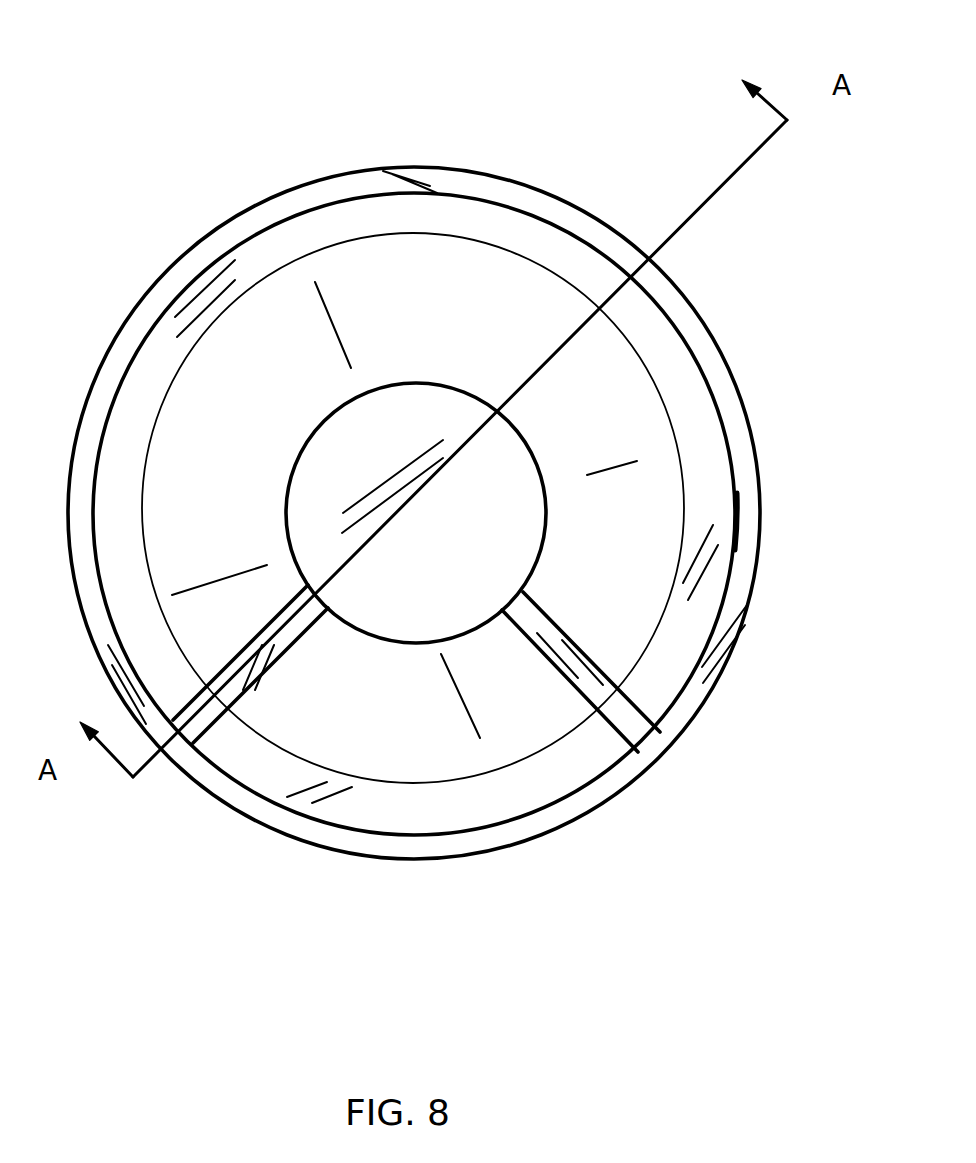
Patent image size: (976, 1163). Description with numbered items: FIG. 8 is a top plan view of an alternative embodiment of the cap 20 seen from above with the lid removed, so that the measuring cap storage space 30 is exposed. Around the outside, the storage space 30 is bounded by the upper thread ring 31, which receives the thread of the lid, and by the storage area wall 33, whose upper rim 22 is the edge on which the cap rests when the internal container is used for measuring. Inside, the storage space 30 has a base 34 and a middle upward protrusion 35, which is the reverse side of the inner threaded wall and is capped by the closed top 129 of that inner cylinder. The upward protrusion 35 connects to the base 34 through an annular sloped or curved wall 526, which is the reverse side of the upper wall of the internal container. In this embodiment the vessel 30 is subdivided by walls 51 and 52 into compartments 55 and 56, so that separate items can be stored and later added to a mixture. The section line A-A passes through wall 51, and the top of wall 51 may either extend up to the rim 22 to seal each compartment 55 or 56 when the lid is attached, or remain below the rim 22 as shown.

The cap 20 is at (613, 152).
The upper rim 22 is at (312, 197).
The measuring cap storage space 30 is at (390, 245).
The upper thread ring 31 is at (175, 260).
The storage area wall 33 is at (737, 493).
The base 34 is at (697, 612).
The upward protrusion 35 is at (393, 455).
The wall 51 is at (262, 655).
The wall 52 is at (605, 722).
The compartment 55 is at (397, 768).
The compartment 56 is at (607, 329).
The closed top 129 is at (500, 531).
The annular sloped or curved wall 526 is at (225, 504).